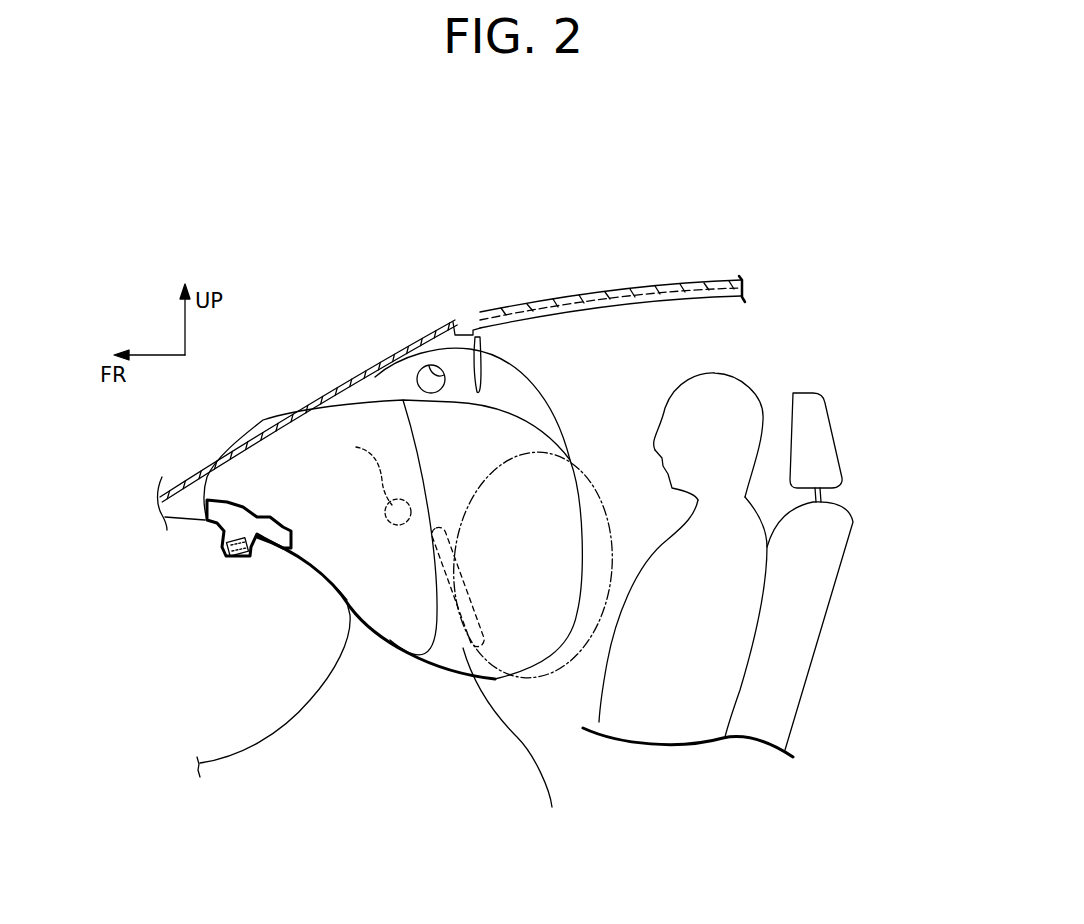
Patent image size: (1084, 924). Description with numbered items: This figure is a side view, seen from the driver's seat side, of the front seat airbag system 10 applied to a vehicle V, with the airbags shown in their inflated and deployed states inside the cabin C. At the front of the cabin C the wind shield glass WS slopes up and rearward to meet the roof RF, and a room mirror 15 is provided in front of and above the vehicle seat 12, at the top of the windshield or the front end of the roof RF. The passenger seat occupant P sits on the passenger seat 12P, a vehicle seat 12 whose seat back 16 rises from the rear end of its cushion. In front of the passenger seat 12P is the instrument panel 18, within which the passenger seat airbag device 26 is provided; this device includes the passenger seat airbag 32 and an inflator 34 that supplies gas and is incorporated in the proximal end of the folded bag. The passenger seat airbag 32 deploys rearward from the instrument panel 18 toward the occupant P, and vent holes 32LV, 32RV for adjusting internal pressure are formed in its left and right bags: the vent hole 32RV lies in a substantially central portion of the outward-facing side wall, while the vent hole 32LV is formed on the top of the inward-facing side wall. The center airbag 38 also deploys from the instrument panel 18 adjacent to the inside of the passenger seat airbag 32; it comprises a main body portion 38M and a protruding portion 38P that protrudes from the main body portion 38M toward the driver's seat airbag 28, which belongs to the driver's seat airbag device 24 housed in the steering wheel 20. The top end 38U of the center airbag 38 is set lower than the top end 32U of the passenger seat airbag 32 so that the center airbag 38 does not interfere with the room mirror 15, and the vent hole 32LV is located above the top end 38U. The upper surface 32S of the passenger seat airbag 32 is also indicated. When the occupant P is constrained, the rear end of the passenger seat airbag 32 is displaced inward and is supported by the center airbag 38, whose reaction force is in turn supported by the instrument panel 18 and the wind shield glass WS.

The front seat airbag system 10 is at (762, 330).
The vehicle V is at (727, 252).
The passenger seat occupant P is at (767, 392).
The cabin C is at (664, 342).
The vehicle seat 12 is at (742, 591).
The passenger seat 12P is at (798, 673).
The seat back 16 is at (785, 720).
The room mirror 15 is at (500, 388).
The instrument panel 18 is at (287, 697).
The steering wheel 20 is at (515, 745).
The driver's seat airbag device 24 is at (553, 635).
The passenger seat airbag device 26 is at (426, 592).
The driver's seat airbag 28 is at (560, 662).
The passenger seat airbag 32 is at (465, 401).
The upper surface of airbag 32S is at (393, 383).
The top end of passenger seat airbag 32U is at (502, 395).
The vent hole of left bag 32LV is at (445, 367).
The vent hole of right bag 32RV is at (346, 481).
The inflator 34 is at (228, 557).
The center airbag 38 is at (407, 626).
The protruding portion 38P is at (397, 630).
The main body portion 38M is at (457, 662).
The top end of center airbag 38U is at (503, 408).
The wind shield glass WS is at (419, 333).
The roof RF is at (620, 288).